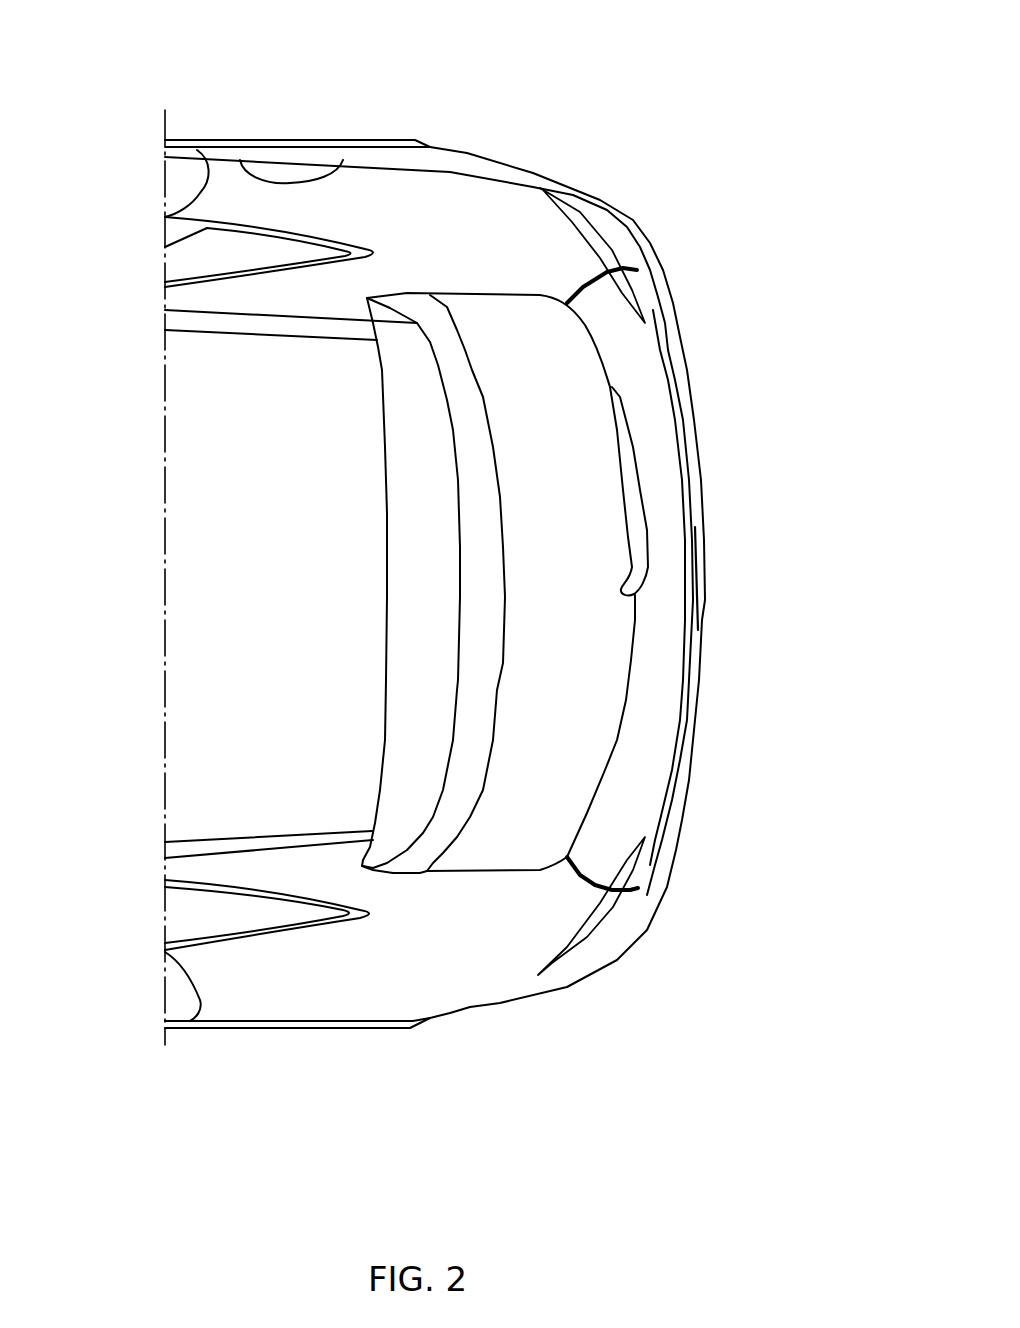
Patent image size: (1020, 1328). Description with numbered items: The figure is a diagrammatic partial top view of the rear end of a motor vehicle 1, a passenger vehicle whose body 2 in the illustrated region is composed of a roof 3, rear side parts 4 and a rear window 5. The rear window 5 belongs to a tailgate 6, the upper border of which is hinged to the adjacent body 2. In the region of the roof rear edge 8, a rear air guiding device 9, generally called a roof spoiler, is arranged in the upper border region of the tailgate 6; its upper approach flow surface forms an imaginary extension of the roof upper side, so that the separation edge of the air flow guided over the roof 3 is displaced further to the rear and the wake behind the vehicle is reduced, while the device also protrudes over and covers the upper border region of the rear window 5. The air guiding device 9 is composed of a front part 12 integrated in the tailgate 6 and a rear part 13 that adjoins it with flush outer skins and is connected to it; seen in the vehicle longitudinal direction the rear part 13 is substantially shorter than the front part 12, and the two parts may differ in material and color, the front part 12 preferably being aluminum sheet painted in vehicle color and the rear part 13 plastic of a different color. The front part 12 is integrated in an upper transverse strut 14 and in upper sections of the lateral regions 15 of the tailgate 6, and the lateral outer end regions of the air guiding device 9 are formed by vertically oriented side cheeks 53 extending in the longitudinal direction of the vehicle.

The motor vehicle 1 is at (226, 130).
The body 2 is at (476, 131).
The roof 3 is at (208, 790).
The rear side parts 4 is at (375, 995).
The rear window 5 is at (557, 383).
The tailgate 6 is at (659, 600).
The roof rear edge 8 is at (383, 543).
The rear air guiding device 9 is at (512, 773).
The front part 12 is at (413, 722).
The rear part 13 is at (478, 490).
The upper transverse strut 14 is at (400, 416).
The lateral regions 15 is at (402, 288).
The side cheeks 53 is at (367, 877).